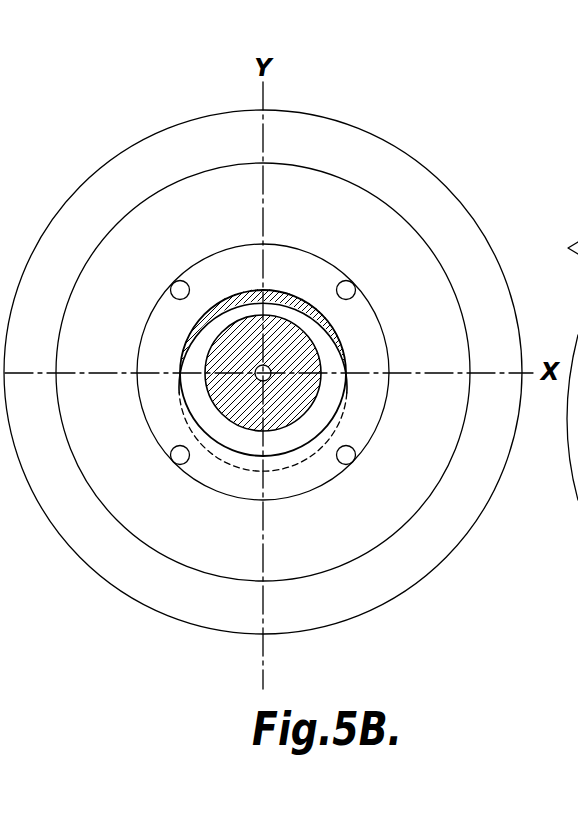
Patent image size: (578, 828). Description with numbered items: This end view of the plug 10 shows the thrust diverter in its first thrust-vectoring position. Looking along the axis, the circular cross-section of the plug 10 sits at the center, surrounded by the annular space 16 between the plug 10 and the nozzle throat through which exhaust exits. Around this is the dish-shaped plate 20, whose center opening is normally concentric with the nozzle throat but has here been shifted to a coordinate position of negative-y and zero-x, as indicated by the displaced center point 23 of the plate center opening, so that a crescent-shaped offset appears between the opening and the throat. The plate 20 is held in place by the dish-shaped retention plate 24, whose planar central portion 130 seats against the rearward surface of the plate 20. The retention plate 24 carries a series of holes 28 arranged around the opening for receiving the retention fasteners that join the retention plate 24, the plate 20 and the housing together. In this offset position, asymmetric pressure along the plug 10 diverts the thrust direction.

The plug 10 is at (238, 350).
The annular space 16 is at (245, 442).
The dish-shaped plate 20 is at (242, 290).
The center point 23 is at (280, 377).
The retention plate 24 is at (383, 167).
The holes 28 is at (347, 288).
The planar central portion 130 is at (306, 268).